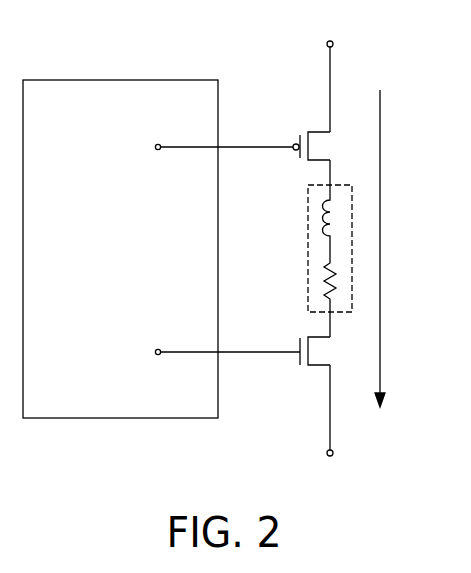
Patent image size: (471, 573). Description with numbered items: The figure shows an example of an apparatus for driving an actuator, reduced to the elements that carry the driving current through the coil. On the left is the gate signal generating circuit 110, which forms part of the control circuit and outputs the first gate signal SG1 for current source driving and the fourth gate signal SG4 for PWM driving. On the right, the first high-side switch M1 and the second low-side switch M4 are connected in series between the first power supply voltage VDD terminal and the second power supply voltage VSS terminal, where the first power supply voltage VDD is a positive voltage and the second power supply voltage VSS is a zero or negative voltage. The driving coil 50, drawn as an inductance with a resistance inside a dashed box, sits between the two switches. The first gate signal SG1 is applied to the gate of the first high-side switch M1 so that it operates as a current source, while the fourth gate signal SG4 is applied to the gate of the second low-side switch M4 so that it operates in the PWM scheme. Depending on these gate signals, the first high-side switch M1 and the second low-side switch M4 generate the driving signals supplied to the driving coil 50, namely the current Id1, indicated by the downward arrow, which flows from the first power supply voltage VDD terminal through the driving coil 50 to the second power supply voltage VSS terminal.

The gate signal generating circuit 110 is at (161, 220).
The driving coil 50 is at (308, 252).
The first high-side switch M1 is at (308, 152).
The second low-side switch M4 is at (308, 365).
The first gate signal SG1 is at (200, 147).
The fourth gate signal SG4 is at (204, 353).
The first power supply voltage VDD is at (330, 73).
The second power supply voltage VSS is at (330, 425).
The current Id1 is at (398, 248).